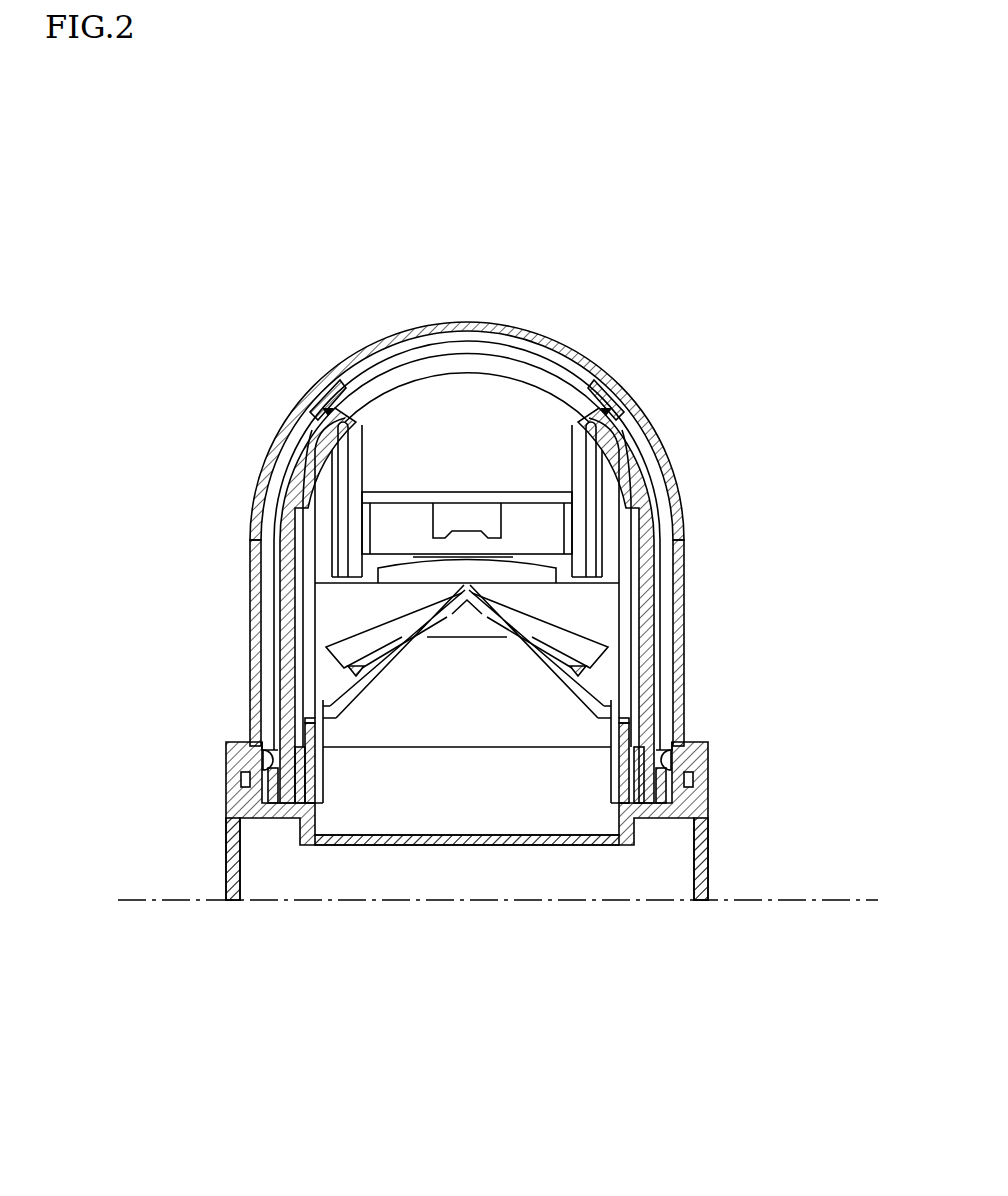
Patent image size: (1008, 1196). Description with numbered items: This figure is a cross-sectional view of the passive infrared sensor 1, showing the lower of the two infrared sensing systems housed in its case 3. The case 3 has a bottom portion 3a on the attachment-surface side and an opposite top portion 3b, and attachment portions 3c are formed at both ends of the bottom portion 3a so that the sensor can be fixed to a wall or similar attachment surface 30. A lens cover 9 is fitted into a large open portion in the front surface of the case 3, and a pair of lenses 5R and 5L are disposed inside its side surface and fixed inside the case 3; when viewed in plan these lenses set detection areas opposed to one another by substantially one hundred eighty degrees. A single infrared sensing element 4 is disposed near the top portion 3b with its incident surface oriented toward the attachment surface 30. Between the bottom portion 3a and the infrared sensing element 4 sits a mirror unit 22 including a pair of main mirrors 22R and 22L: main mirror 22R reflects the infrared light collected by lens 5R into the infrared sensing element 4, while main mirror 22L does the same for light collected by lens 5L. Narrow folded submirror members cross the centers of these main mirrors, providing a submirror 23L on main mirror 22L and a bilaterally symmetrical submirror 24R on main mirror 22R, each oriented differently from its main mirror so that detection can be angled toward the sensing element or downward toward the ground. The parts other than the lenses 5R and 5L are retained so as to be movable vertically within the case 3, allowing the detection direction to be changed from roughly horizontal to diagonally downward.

The passive infrared sensor 1 is at (90, 255).
The case 3 is at (515, 313).
The bottom portion 3a is at (470, 847).
The top portion 3b is at (430, 322).
The attachment portions 3c is at (242, 877).
The infrared sensing element 4 is at (453, 517).
The lens 5L is at (283, 648).
The lens 5R is at (650, 648).
The lens cover 9 is at (607, 370).
The mirror unit 22 is at (481, 598).
The main mirror 22L is at (357, 672).
The main mirror 22R is at (577, 672).
The submirror 23L is at (357, 635).
The submirror 24R is at (563, 633).
The attachment surface 30 is at (830, 898).